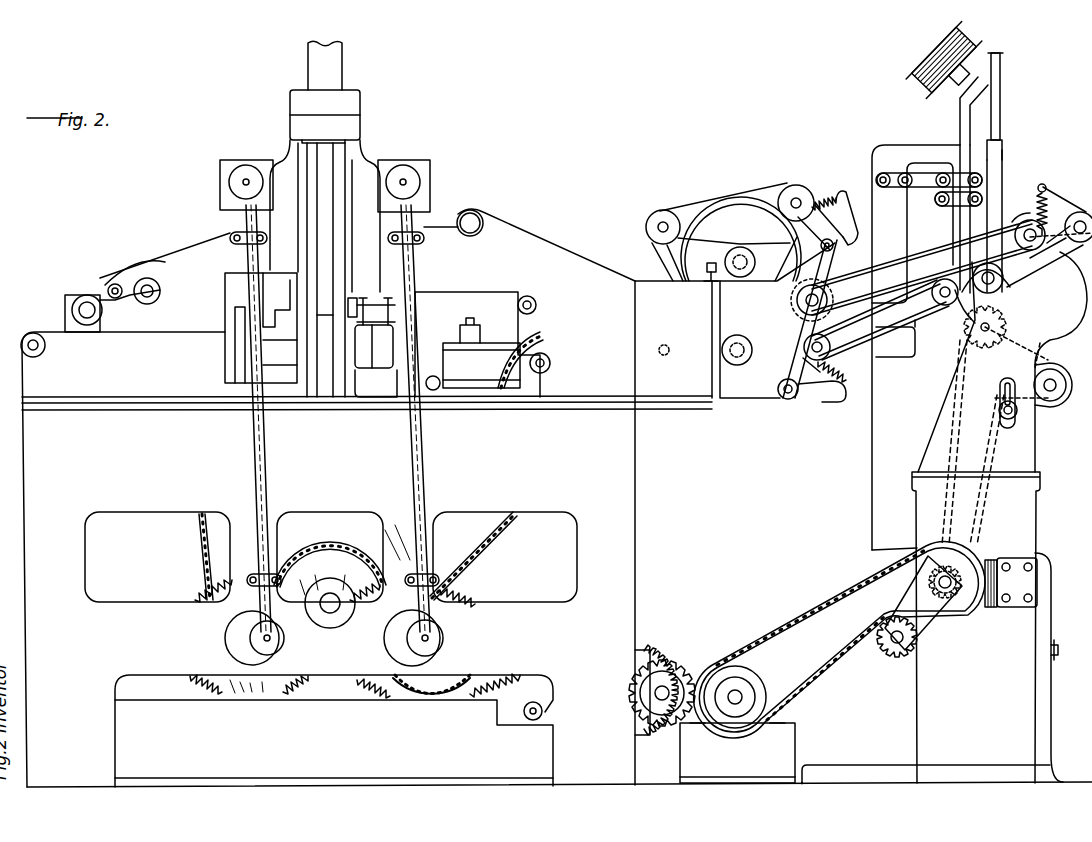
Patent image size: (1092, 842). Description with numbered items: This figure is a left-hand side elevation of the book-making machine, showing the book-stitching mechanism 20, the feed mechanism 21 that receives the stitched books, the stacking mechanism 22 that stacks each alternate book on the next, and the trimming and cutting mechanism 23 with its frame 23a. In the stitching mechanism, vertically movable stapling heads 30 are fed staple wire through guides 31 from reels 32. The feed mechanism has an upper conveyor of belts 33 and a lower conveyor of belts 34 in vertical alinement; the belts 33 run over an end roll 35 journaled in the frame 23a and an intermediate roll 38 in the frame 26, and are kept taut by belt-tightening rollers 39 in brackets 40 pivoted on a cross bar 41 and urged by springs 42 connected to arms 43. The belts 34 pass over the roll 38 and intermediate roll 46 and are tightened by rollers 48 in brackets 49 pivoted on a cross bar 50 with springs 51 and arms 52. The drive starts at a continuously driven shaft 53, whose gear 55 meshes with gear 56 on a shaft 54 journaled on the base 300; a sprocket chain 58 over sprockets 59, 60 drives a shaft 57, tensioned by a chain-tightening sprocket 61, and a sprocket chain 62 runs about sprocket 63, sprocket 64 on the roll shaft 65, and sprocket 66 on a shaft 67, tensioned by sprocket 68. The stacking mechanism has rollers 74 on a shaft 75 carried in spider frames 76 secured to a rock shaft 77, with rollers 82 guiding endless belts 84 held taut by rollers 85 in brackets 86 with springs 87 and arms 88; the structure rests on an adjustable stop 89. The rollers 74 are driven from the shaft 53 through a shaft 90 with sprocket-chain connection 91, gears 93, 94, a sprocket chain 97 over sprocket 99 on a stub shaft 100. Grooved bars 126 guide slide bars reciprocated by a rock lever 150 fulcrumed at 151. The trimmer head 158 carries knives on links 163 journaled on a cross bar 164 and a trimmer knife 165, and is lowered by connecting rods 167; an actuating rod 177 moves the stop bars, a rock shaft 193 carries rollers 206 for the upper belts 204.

The book-stitching mechanism 20 is at (1016, 108).
The feed mechanism 21 is at (853, 261).
The stacking mechanism 22 is at (749, 172).
The book trimming and cutting mechanism 23 is at (388, 134).
The frame 23a is at (637, 542).
The frame 26 is at (1033, 643).
The stapling heads 30 is at (1000, 178).
The guides 31 is at (1002, 85).
The reels 32 is at (915, 55).
The belts 33 is at (918, 245).
The belts 34 is at (852, 344).
The end roll 35 is at (800, 316).
The intermediate roll 38 is at (1003, 278).
The belt-tightening rollers 39 is at (1023, 220).
The brackets 40 is at (1049, 245).
The cross bar 41 is at (1082, 210).
The springs 42 is at (1038, 194).
The arms 43 is at (1050, 190).
The intermediate roll 46 is at (935, 304).
The belt-tightening rollers 48 is at (805, 345).
The brackets 49 is at (803, 360).
The cross bar 50 is at (786, 394).
The springs 51 is at (846, 378).
The arms 52 is at (823, 396).
The shaft 53 is at (668, 687).
The shaft 54 is at (745, 692).
The gear 55 is at (658, 660).
The gear 56 is at (829, 689).
The shaft 57 is at (985, 552).
The sprocket chain 58 is at (815, 612).
The sprocket 59 is at (722, 662).
The sprocket 60 is at (918, 580).
The chain-tightening sprocket 61 is at (890, 647).
The sprocket chain 62 is at (985, 458).
The sprocket 63 is at (905, 566).
The sprocket 64 is at (985, 342).
The shaft 65 is at (992, 332).
The sprocket 66 is at (1043, 345).
The shaft 67 is at (1056, 392).
The chain-tightening sprocket 68 is at (1012, 420).
The rollers 74 is at (720, 222).
The shaft 75 is at (741, 280).
The spider frames 76 is at (688, 225).
The shaft 77 is at (810, 319).
The rollers 82 is at (654, 216).
The endless conveyor belts 84 is at (758, 196).
The belt-tightening rollers 85 is at (800, 190).
The brackets 86 is at (799, 233).
The springs 87 is at (830, 195).
The arms 88 is at (856, 218).
The adjustable stop 89 is at (708, 283).
The shaft 90 is at (330, 612).
The sprocket-chain connection 91 is at (488, 600).
The gear 93 is at (392, 690).
The gear 94 is at (275, 692).
The sprocket chain 97 is at (500, 532).
The sprocket 99 is at (538, 342).
The stub shaft 100 is at (550, 364).
The bars 126 is at (483, 343).
The rock lever 150 is at (568, 580).
The fulcrum 151 is at (543, 710).
The head 158 is at (430, 167).
The links 163 is at (452, 212).
The cross bar 164 is at (485, 218).
The trimmer knife 165 is at (262, 300).
The connecting rods 167 is at (256, 462).
The actuating rod 177 is at (345, 520).
The rock shaft 193 is at (147, 304).
The belts 204 is at (110, 283).
The rollers 206 is at (147, 262).
The base 300 is at (797, 748).